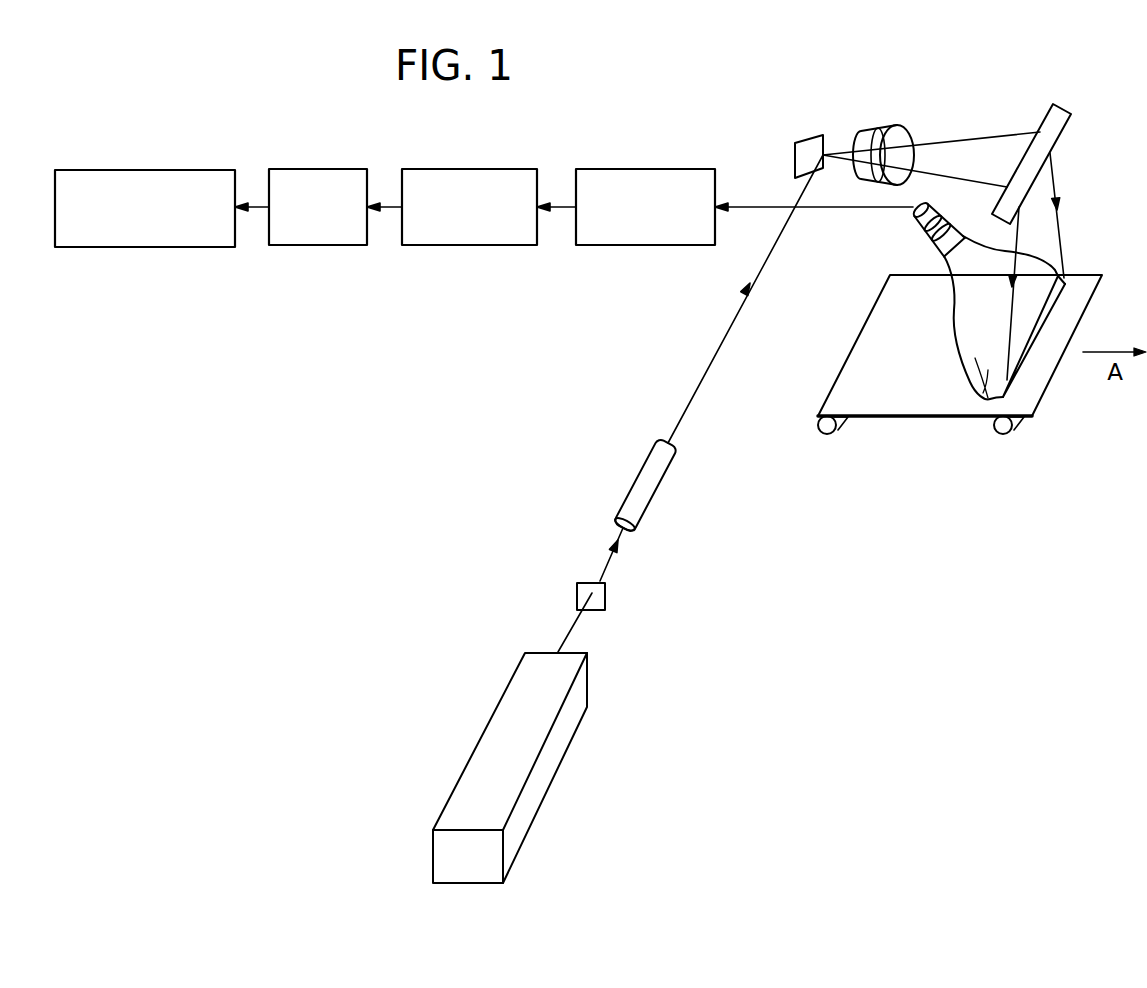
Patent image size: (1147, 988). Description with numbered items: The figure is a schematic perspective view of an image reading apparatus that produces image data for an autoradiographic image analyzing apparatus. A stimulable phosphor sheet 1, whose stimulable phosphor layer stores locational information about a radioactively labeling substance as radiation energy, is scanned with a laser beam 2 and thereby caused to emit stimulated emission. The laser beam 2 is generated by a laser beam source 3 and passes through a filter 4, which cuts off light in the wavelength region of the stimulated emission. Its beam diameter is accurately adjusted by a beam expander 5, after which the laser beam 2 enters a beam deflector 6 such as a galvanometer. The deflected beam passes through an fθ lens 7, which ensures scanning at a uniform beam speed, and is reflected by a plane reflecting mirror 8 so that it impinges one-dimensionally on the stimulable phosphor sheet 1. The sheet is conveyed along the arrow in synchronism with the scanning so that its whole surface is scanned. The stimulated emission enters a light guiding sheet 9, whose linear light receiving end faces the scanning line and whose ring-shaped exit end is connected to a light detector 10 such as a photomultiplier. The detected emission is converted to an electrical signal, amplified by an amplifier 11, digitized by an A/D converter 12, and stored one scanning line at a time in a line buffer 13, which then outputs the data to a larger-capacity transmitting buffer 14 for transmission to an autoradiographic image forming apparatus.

The stimulable phosphor sheet 1 is at (903, 392).
The laser beam 2 is at (728, 322).
The laser beam source 3 is at (530, 683).
The filter 4 is at (577, 588).
The beam expander 5 is at (640, 490).
The beam deflector 6 is at (817, 147).
The fθ lens 7 is at (887, 127).
The plane reflecting mirror 8 is at (1045, 130).
The light guiding sheet 9 is at (982, 400).
The light detector 10 is at (918, 223).
The amplifier 11 is at (672, 169).
The A/D converter 12 is at (472, 169).
The line buffer 13 is at (320, 169).
The transmitting buffer 14 is at (170, 170).